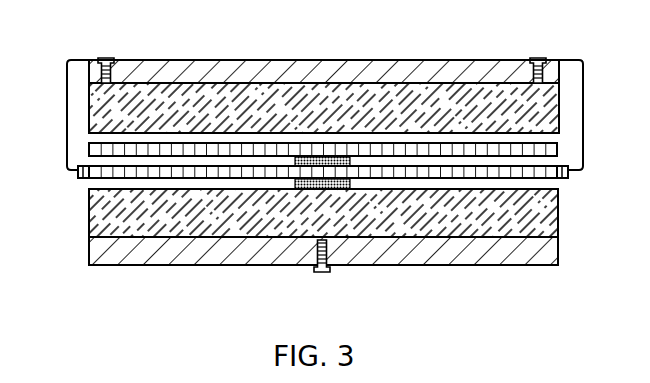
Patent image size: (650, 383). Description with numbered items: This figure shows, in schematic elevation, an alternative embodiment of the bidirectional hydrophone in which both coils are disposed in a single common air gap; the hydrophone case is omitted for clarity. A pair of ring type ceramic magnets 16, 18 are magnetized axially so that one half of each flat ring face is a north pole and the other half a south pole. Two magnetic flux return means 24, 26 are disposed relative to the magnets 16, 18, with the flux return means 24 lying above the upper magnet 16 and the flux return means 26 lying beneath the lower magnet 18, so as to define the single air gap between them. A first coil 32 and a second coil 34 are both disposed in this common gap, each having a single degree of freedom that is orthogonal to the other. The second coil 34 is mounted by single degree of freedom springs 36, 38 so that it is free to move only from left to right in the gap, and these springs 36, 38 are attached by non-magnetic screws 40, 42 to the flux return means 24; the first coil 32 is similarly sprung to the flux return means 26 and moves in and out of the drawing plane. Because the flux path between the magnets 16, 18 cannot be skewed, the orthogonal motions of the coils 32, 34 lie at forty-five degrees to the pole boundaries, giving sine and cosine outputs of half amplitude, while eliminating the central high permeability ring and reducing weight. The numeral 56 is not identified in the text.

The ring type ceramic magnet 16 is at (210, 100).
The magnetic flux return means 24 is at (444, 70).
The non-magnetic screw 42 is at (110, 58).
The non-magnetic screw 40 is at (543, 58).
The single degree of freedom spring 38 is at (67, 119).
The single degree of freedom spring 36 is at (583, 118).
The first coil 32 is at (557, 150).
The second coil 34 is at (90, 180).
The ring type ceramic magnet 18 is at (556, 232).
The spacer fastener 56 is at (313, 190).
The magnetic flux return means 26 is at (415, 255).